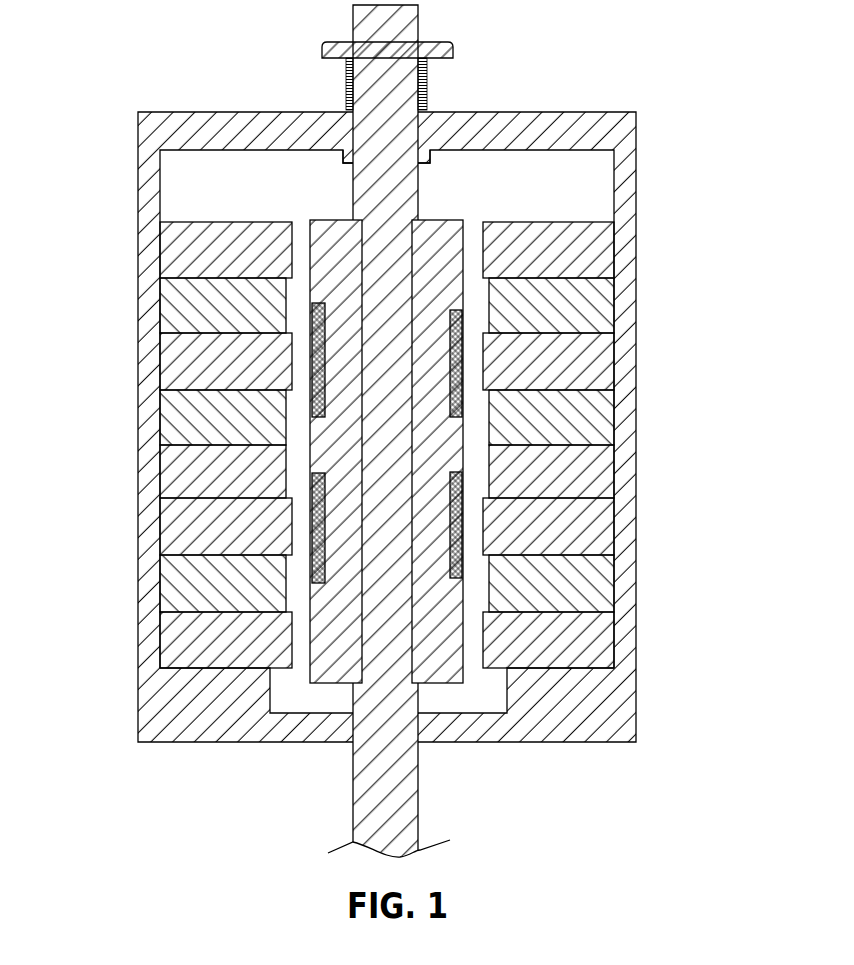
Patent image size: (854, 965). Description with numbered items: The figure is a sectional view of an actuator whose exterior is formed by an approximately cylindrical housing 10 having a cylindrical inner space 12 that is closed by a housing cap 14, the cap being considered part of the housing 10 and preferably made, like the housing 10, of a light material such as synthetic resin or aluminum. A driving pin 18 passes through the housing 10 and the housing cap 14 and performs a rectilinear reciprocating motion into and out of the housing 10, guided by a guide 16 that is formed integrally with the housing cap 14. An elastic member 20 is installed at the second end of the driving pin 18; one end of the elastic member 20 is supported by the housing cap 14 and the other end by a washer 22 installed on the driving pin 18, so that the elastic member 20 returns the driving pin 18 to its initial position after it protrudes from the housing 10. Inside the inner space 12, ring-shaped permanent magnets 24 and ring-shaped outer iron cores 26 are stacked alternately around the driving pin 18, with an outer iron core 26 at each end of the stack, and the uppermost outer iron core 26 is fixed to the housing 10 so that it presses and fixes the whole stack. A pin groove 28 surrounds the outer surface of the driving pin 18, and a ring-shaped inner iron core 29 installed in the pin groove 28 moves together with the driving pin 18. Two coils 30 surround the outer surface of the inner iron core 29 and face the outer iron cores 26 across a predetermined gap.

The housing 10 is at (638, 222).
The inner space 12 is at (210, 178).
The housing cap 14 is at (138, 125).
The guide 16 is at (345, 164).
The driving pin 18 is at (353, 803).
The elastic member 20 is at (430, 72).
The washer 22 is at (455, 44).
The permanent magnet 24 is at (165, 305).
The outer iron core 26 is at (165, 360).
The pin groove 28 is at (333, 686).
The inner iron core 29 is at (412, 280).
The coil 30 is at (312, 380).